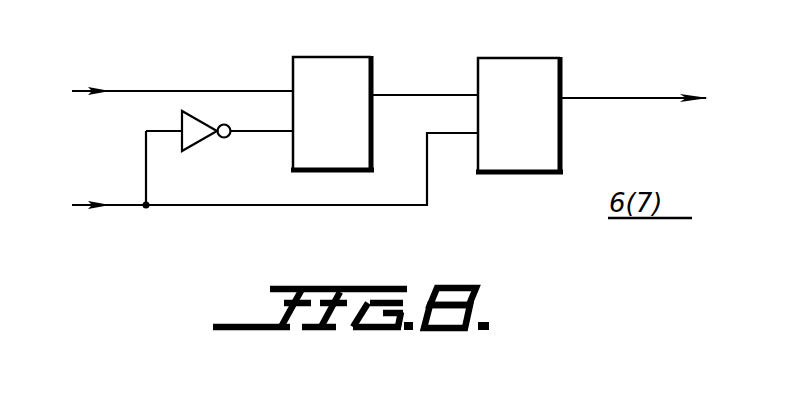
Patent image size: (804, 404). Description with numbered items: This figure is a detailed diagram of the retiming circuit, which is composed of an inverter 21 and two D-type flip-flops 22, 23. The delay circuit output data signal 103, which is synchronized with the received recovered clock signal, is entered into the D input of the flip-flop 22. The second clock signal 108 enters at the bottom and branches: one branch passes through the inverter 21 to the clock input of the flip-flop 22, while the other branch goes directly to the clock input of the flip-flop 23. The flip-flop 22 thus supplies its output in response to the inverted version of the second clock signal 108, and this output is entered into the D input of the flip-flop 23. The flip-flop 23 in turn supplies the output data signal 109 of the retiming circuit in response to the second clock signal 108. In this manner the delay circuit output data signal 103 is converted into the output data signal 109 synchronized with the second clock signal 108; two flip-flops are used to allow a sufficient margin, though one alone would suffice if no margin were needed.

The delay circuit output data signal 103 is at (217, 62).
The flip-flop 22 is at (362, 37).
The flip-flop 23 is at (549, 37).
The output data signal 109 is at (602, 98).
The inverter 21 is at (192, 145).
The second clock signal 108 is at (123, 207).